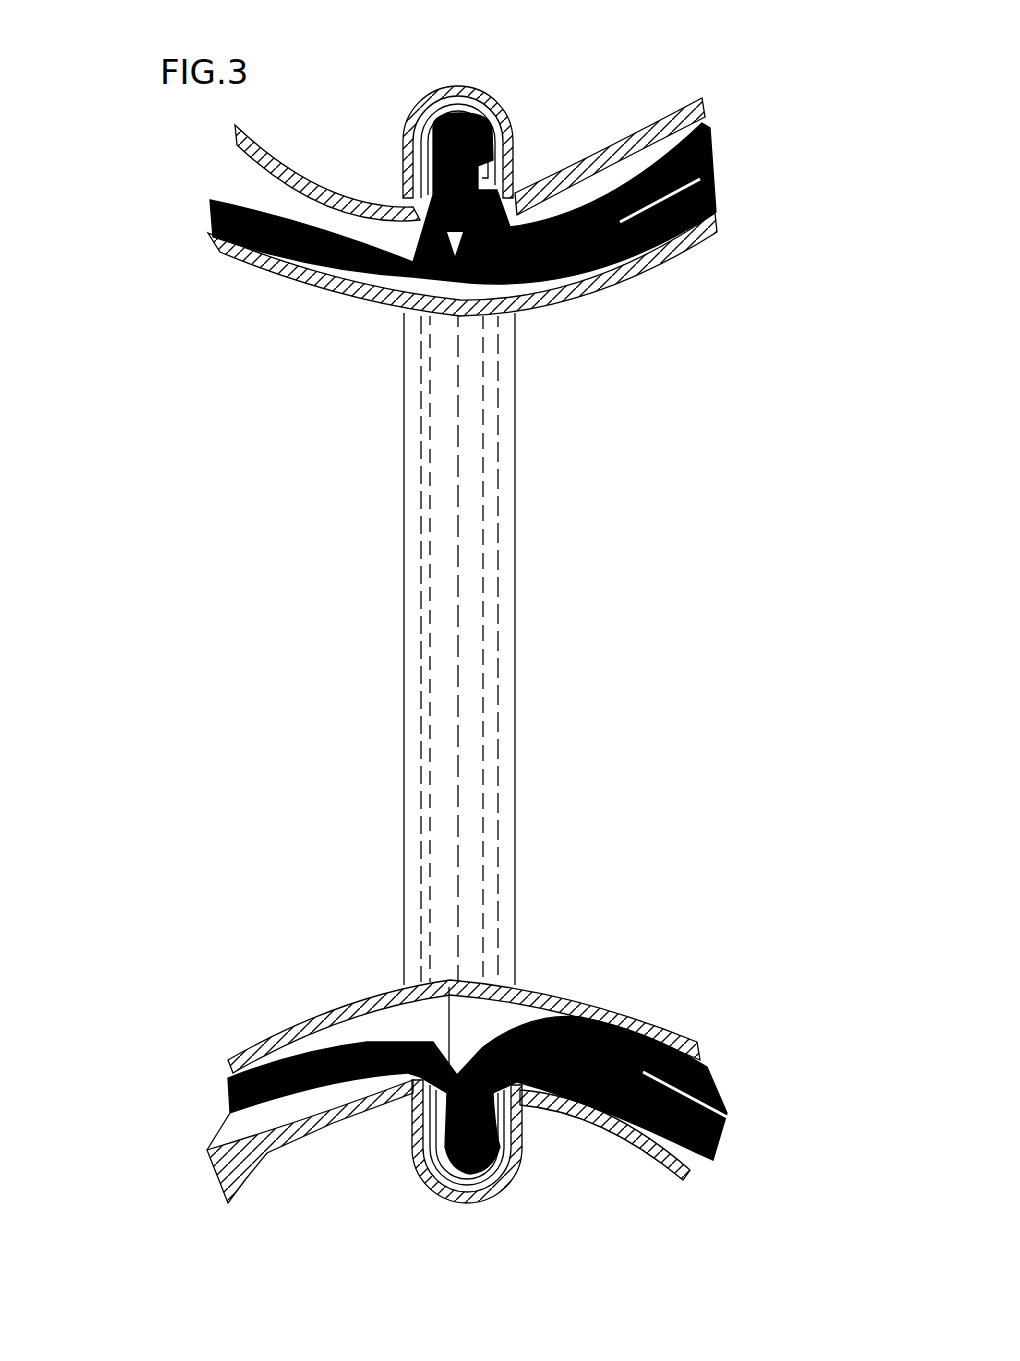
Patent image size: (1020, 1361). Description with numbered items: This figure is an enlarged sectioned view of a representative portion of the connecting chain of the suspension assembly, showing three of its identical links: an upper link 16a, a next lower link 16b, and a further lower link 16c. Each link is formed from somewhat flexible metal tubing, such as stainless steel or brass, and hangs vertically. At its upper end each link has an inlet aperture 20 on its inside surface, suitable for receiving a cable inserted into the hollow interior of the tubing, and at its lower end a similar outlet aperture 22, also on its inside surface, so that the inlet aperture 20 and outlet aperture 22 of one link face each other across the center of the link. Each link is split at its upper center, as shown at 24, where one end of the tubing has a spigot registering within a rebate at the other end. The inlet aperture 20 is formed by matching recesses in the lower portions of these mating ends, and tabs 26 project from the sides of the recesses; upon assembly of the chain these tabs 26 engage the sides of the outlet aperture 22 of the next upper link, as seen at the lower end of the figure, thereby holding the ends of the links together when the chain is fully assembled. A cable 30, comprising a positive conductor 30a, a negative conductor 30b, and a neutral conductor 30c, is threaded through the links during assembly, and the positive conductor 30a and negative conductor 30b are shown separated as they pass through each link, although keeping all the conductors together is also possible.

The upper link 16a is at (578, 296).
The next lower link 16b is at (440, 90).
The further lower link 16c is at (623, 1003).
The inlet aperture 20 is at (497, 186).
The outlet aperture 22 is at (422, 200).
The split 24 is at (450, 1017).
The tabs 26 is at (517, 1093).
The cable 30 is at (417, 1162).
The positive conductor 30a is at (708, 1068).
The negative conductor 30b is at (347, 1047).
The neutral conductor 30c is at (677, 1143).